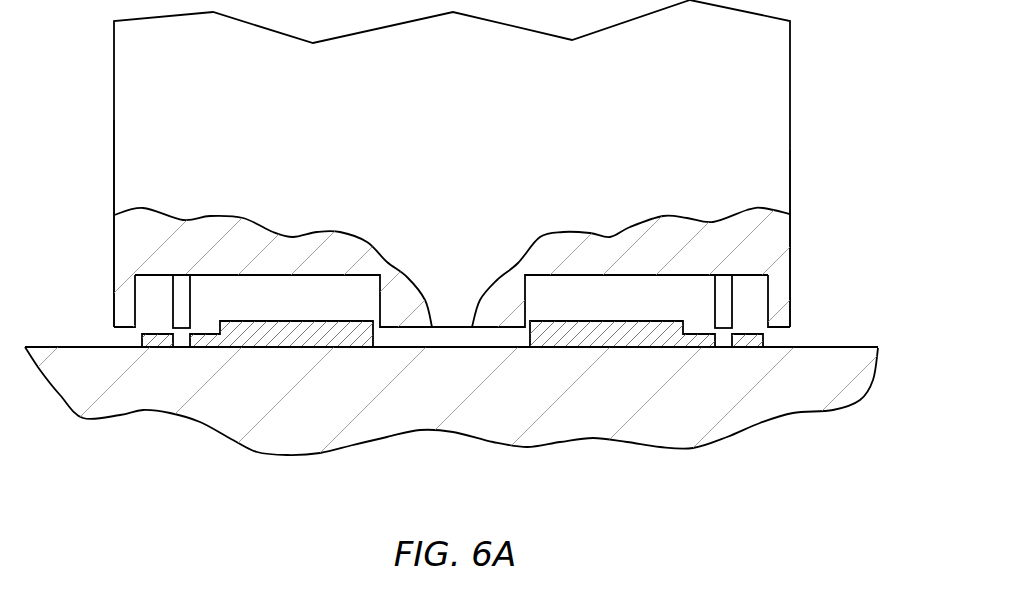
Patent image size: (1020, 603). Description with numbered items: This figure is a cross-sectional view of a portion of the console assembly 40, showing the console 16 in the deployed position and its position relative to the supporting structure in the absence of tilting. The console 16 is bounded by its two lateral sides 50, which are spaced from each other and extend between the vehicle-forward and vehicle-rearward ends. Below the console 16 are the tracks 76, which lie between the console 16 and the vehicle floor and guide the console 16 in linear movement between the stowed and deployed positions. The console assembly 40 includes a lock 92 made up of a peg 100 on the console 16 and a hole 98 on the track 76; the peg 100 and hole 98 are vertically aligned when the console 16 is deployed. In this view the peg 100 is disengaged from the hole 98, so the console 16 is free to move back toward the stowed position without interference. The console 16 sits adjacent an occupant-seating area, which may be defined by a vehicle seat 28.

The console 16 is at (790, 90).
The lateral sides 50 is at (114, 124).
The console assembly 40 is at (848, 207).
The hole 98 is at (173, 298).
The peg 100 is at (180, 342).
The track 76 is at (292, 334).
The vehicle seat 28 is at (855, 347).
The lock 92 is at (180, 349).